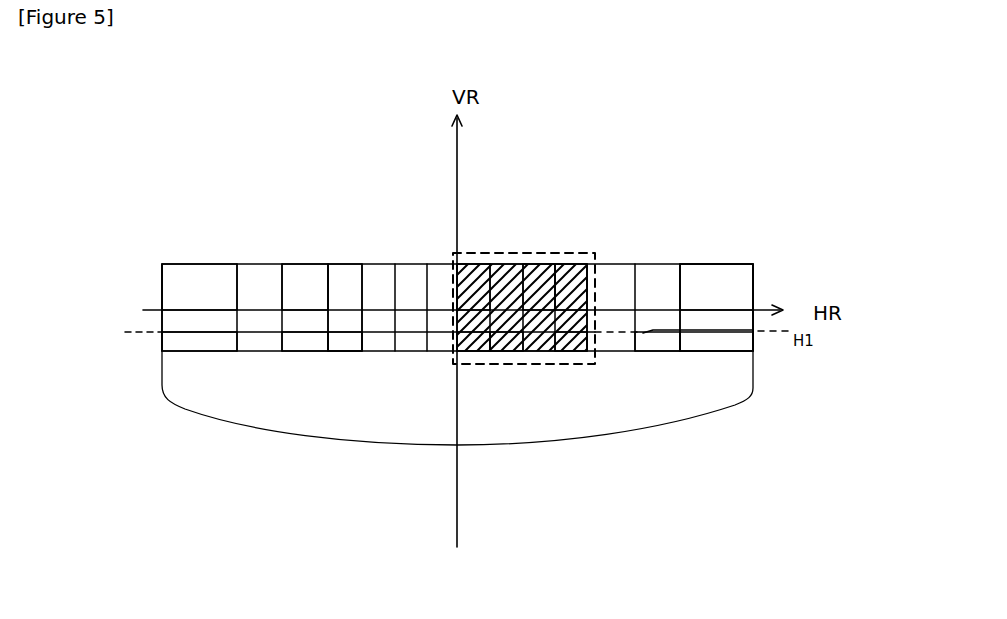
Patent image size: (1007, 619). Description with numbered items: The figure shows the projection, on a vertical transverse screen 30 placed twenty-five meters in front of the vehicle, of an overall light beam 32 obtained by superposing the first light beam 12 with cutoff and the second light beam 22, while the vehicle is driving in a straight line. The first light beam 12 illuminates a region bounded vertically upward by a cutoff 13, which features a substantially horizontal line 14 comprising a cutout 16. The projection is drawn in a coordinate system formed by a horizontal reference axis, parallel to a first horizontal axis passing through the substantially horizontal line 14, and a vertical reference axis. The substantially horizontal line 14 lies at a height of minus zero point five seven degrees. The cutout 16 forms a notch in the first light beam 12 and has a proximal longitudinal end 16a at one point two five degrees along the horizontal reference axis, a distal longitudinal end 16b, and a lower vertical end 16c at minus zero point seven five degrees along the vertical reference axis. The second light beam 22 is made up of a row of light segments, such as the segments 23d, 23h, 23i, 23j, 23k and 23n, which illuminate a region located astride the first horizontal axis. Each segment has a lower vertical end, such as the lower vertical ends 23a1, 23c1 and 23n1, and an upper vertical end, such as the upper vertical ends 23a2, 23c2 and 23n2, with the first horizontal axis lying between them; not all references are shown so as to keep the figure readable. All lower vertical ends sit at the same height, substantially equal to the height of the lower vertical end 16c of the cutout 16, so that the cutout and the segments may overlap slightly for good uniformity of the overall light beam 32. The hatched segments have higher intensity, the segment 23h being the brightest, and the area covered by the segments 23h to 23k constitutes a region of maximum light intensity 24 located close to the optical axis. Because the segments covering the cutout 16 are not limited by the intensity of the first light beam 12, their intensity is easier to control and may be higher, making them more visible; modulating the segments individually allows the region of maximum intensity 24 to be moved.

The first light beam with cutoff 12 is at (724, 431).
The cutoff 13 is at (342, 327).
The substantially horizontal line 14 is at (195, 330).
The cutout 16 is at (609, 351).
The proximal longitudinal end 16a is at (471, 351).
The distal longitudinal end 16b is at (648, 334).
The lower vertical end 16c is at (573, 351).
The second light beam 22 is at (772, 265).
The lower vertical end of light segment 23a1 is at (191, 351).
The upper vertical end of light segment 23a2 is at (188, 264).
The lower vertical end of light segment 23c1 is at (307, 351).
The upper vertical end of light segment 23c2 is at (300, 264).
The light segment 23d is at (352, 351).
The light segment 23h is at (479, 264).
The light segment 23i is at (507, 351).
The light segment 23j is at (538, 264).
The light segment 23k is at (587, 264).
The light segment 23n is at (753, 343).
The lower vertical end of light segment 23n1 is at (717, 351).
The upper vertical end of light segment 23n2 is at (716, 264).
The region of maximum light intensity 24 is at (563, 253).
The screen 30 is at (226, 159).
The overall light beam 32 is at (128, 257).